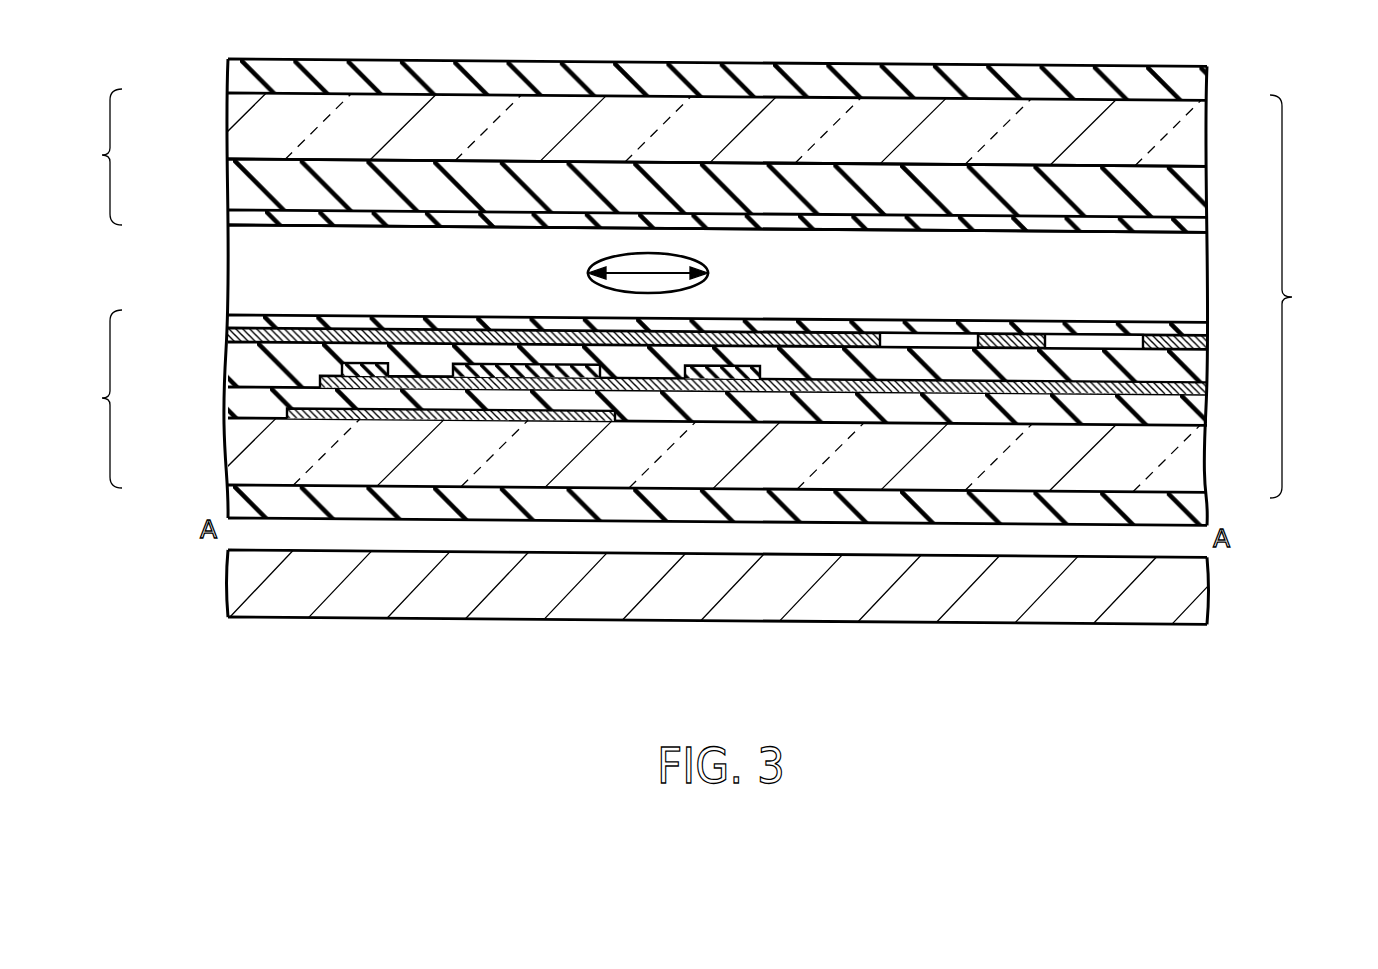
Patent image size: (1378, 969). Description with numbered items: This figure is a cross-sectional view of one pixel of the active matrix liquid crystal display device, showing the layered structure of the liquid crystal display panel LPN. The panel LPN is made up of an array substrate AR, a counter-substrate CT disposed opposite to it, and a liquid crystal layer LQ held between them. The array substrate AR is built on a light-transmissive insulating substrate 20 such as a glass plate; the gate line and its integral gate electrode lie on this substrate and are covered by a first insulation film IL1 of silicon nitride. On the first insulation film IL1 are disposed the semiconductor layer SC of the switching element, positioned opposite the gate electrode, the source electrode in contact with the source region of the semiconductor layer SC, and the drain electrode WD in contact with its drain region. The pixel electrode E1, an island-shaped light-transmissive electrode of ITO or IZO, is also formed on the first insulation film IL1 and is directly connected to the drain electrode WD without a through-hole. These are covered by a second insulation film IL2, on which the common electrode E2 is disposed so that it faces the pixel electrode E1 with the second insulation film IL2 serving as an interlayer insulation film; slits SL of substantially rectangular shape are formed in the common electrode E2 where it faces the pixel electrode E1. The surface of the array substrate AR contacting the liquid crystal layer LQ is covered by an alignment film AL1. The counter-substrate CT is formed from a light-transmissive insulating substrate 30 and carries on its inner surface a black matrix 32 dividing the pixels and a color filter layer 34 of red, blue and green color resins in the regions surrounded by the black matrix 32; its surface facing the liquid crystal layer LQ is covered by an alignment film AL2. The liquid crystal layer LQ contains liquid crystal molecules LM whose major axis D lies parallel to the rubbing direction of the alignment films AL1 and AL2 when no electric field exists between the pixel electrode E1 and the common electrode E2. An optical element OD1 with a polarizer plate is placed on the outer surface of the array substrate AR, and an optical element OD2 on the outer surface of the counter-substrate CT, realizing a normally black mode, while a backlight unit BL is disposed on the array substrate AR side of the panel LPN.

The optical element OD2 is at (233, 75).
The insulating substrate 30 is at (230, 112).
The black matrix 32 is at (292, 168).
The color filter layer 34 is at (230, 180).
The alignment film AL2 is at (233, 216).
The counter-substrate CT is at (89, 157).
The liquid crystal layer LQ is at (232, 265).
The liquid crystal molecules LM is at (590, 273).
The major axis D is at (660, 272).
The alignment film AL1 is at (233, 323).
The common electrode E2 is at (230, 337).
The slit SL is at (918, 338).
The second insulation film IL2 is at (228, 370).
The pixel electrode E1 is at (1188, 392).
The semiconductor layer SC is at (412, 374).
The drain electrode WD is at (487, 370).
The first insulation film IL1 is at (228, 408).
The insulating substrate 20 is at (230, 462).
The optical element OD1 is at (230, 498).
The array substrate AR is at (91, 399).
The liquid crystal display panel LPN is at (1309, 296).
The backlight unit BL is at (230, 583).